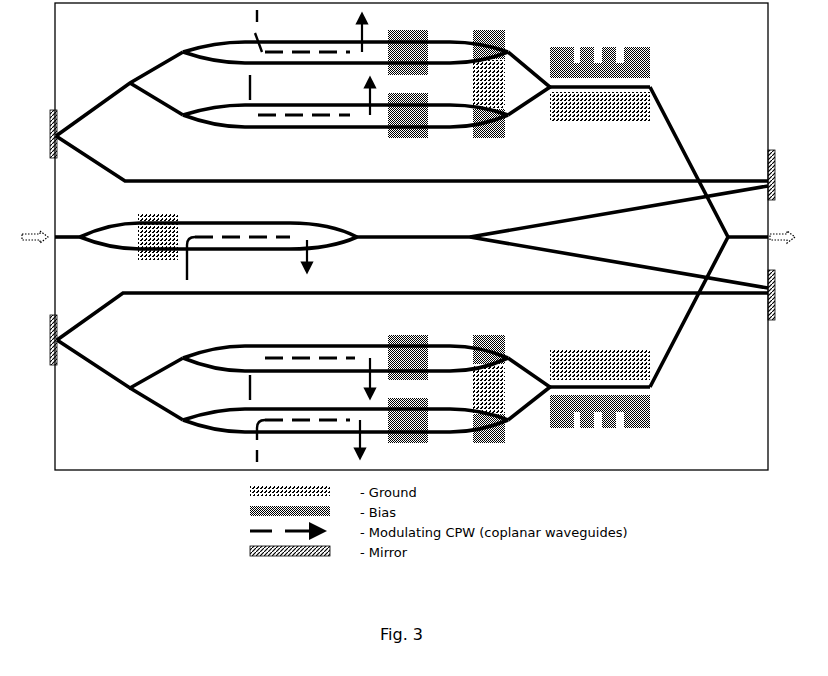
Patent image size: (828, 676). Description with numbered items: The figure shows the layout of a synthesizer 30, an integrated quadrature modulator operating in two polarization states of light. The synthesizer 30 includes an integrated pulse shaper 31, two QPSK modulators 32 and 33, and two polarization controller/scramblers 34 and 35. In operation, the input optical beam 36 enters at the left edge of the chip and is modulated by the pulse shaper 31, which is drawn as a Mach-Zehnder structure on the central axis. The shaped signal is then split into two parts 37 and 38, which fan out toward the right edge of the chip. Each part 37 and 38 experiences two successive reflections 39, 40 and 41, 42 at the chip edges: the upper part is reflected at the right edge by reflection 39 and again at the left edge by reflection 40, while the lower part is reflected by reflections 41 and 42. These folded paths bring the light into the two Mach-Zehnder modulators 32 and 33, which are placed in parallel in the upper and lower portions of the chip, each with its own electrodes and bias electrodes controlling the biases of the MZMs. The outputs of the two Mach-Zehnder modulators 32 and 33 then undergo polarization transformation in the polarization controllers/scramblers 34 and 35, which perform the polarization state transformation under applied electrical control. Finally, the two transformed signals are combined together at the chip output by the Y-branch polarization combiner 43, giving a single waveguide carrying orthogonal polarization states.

The synthesizer 30 is at (411, 236).
The integrated pulse shaper 31 is at (262, 245).
The QPSK modulator 32 is at (303, 74).
The QPSK modulator 33 is at (303, 398).
The polarization controller/scrambler 34 is at (612, 84).
The polarization controller/scrambler 35 is at (612, 389).
The input optical beam 36 is at (35, 249).
The first part of the signal 37 is at (619, 211).
The second part of the signal 38 is at (619, 262).
The reflection 39 is at (782, 175).
The reflection 40 is at (400, 139).
The reflection 41 is at (781, 311).
The reflection 42 is at (400, 343).
The Y-branch polarization combiner 43 is at (722, 237).